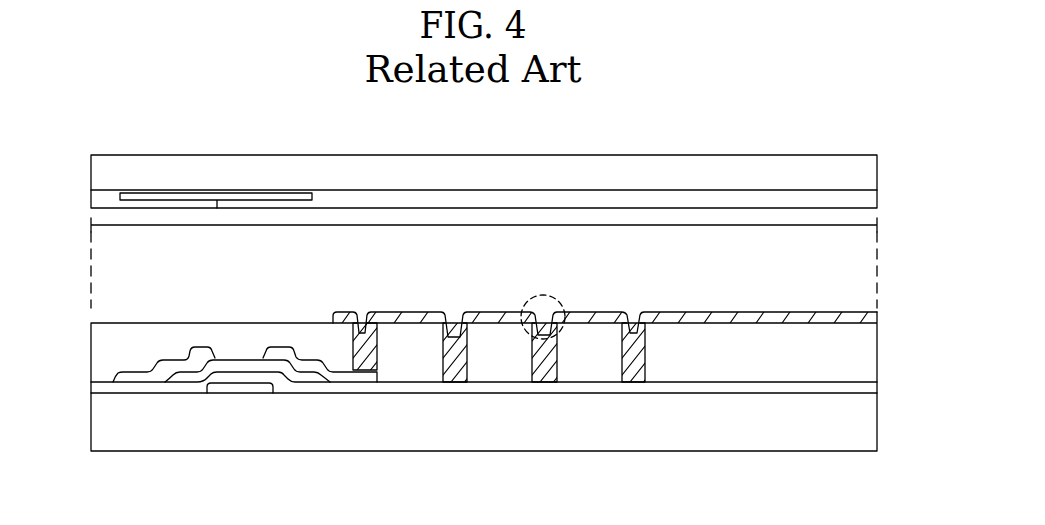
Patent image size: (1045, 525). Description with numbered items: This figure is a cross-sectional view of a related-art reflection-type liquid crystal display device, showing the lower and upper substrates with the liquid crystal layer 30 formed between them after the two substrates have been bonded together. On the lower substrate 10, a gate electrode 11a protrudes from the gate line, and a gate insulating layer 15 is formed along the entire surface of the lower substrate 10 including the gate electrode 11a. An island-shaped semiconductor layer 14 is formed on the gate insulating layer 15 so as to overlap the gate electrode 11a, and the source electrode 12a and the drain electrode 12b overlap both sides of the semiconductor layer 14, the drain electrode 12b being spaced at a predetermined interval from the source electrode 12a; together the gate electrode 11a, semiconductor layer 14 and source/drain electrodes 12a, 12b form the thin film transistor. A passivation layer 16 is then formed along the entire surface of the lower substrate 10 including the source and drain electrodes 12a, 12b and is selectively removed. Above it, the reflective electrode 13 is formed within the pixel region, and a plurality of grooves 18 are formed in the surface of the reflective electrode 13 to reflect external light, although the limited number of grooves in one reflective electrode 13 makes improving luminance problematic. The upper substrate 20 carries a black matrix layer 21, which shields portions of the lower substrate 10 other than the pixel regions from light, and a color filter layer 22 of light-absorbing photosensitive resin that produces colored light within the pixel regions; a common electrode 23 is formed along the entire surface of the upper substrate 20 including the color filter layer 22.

The lower substrate 10 is at (877, 425).
The gate electrode 11a is at (237, 390).
The source electrode 12a is at (132, 376).
The drain electrode 12b is at (333, 378).
The reflective electrode 13 is at (877, 320).
The semiconductor layer 14 is at (236, 367).
The gate insulating layer 15 is at (178, 382).
The passivation layer 16 is at (877, 355).
The grooves 18 is at (555, 337).
The upper substrate 20 is at (877, 168).
The black matrix layer 21 is at (120, 194).
The color filter layer 22 is at (877, 200).
The common electrode 23 is at (91, 219).
The liquid crystal layer 30 is at (877, 254).